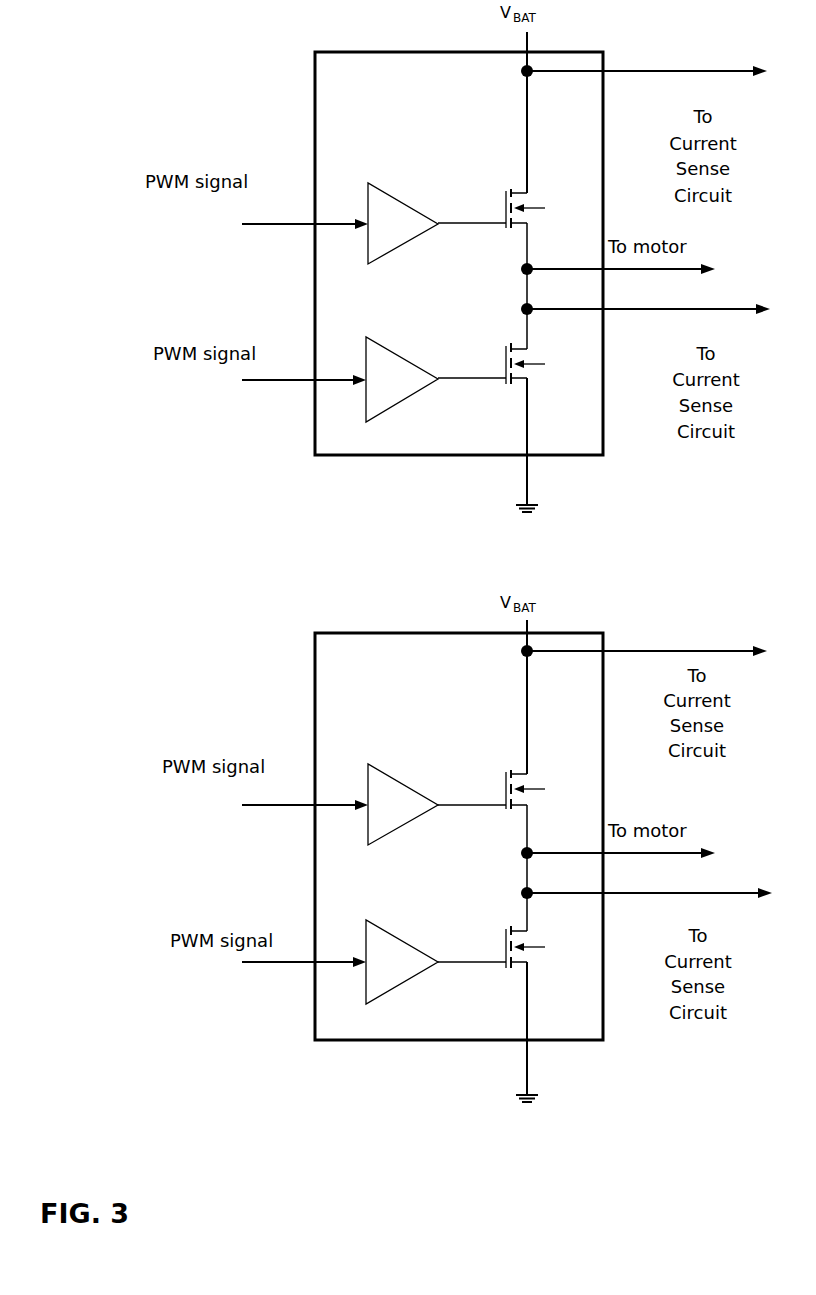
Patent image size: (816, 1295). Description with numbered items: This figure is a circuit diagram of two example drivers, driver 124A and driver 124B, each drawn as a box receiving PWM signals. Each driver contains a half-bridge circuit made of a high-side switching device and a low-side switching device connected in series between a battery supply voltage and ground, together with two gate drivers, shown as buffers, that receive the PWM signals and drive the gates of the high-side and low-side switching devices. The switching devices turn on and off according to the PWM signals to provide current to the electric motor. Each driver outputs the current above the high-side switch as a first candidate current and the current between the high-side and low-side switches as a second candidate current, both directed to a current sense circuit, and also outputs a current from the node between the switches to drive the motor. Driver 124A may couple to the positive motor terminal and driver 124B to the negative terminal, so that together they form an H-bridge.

The driver 124A is at (487, 108).
The driver 124B is at (487, 690).